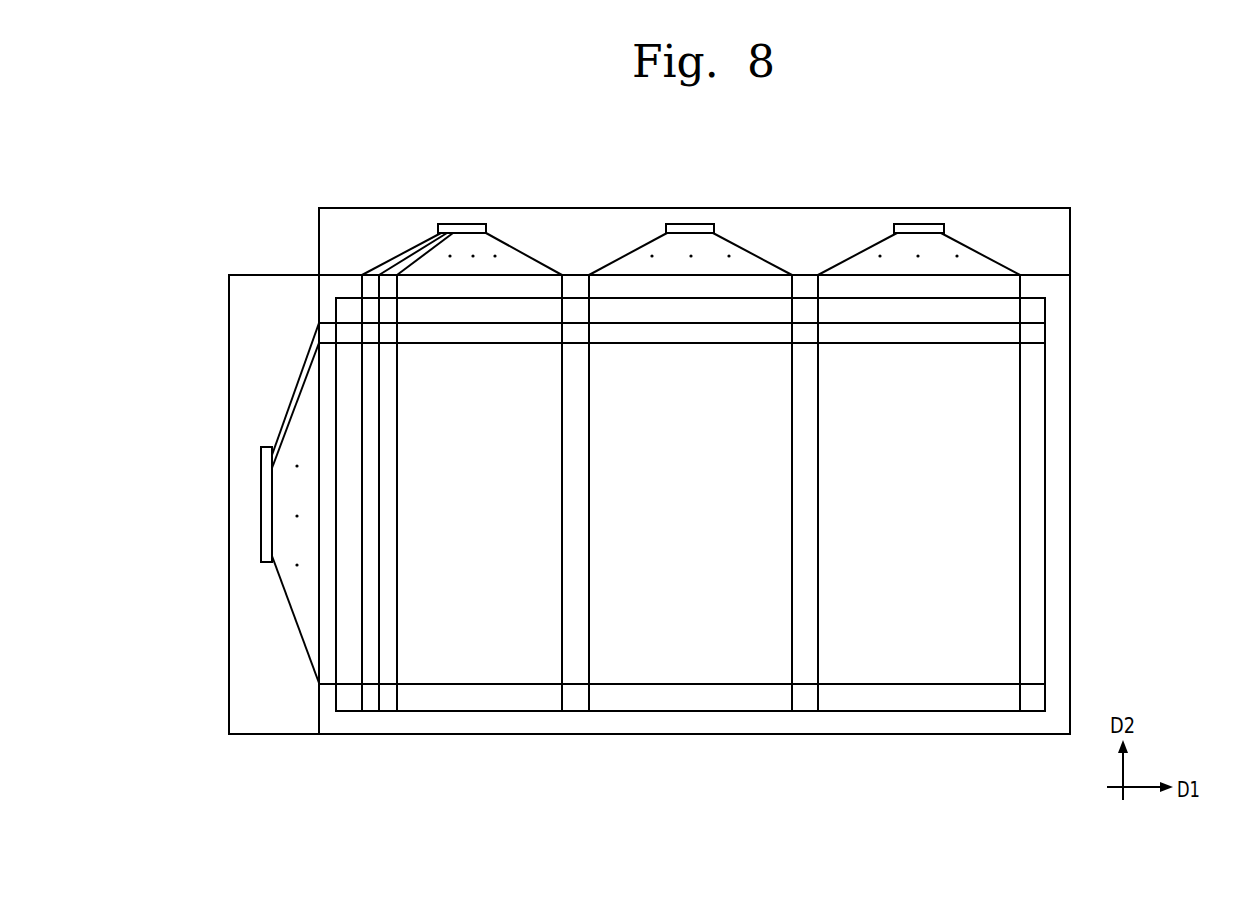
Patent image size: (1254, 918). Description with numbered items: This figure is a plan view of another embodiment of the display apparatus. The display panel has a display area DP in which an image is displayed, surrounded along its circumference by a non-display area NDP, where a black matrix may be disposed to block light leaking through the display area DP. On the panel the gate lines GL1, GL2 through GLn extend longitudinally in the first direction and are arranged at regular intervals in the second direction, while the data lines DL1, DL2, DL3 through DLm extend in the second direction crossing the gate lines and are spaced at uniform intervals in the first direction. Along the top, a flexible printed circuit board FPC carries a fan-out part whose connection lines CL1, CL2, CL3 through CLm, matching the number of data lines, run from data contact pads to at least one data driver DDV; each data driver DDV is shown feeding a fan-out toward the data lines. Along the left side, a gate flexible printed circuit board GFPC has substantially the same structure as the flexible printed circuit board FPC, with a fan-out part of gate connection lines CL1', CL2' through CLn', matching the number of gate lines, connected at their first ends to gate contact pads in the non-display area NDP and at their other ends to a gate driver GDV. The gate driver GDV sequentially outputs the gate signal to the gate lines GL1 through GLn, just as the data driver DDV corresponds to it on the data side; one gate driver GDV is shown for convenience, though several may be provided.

The display area DP is at (1048, 407).
The non-display area NDP is at (1059, 494).
The flexible printed circuit board FPC is at (1058, 237).
The gate flexible printed circuit board GFPC is at (268, 283).
The data driver DDV is at (467, 230).
The first connection line CL1 is at (393, 212).
The second connection line CL2 is at (412, 201).
The third connection line CL3 is at (428, 238).
The m-th connection line CLm is at (978, 248).
The first data line DL1 is at (361, 574).
The second data line DL2 is at (379, 536).
The third data line DL3 is at (397, 493).
The m-th data line DLm is at (1020, 494).
The first gate line GL1 is at (706, 325).
The second gate line GL2 is at (646, 345).
The n-th gate line GLn is at (673, 683).
The gate driver GDV is at (261, 500).
The first gate connection line CL1' is at (233, 389).
The second gate connection line CL2' is at (233, 405).
The n-th gate connection line CLn' is at (233, 619).